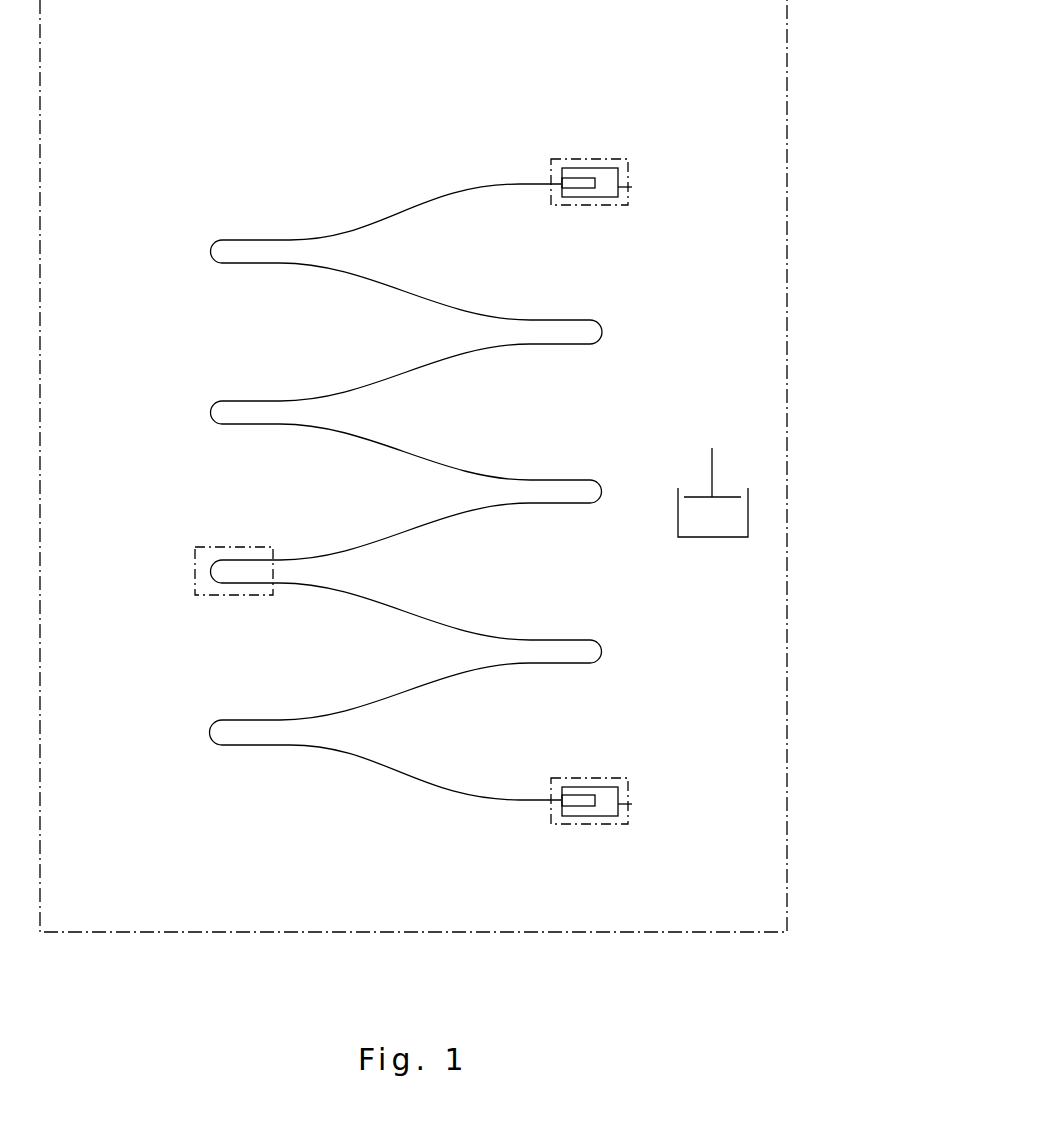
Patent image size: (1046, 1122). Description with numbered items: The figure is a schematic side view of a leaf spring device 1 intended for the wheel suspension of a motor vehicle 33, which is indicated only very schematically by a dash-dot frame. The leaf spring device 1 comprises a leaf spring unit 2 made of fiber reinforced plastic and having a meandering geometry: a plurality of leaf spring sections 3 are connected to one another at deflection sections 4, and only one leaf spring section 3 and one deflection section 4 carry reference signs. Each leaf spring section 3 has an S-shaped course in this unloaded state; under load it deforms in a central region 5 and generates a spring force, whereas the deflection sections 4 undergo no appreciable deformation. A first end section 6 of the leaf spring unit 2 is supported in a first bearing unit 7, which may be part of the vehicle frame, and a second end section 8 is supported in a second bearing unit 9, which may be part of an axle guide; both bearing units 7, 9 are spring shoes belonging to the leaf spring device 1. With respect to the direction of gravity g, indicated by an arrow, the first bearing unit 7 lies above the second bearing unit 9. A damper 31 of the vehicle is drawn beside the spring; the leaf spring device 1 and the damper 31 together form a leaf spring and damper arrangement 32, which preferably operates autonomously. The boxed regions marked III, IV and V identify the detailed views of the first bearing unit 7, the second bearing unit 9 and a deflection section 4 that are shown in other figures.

The leaf spring device 1 is at (349, 82).
The leaf spring unit 2 is at (233, 229).
The leaf spring section 3 is at (487, 183).
The deflection section 4 is at (210, 252).
The central region 5 is at (351, 297).
The first end section 6 is at (582, 197).
The first bearing unit 7 is at (632, 187).
The second end section 8 is at (582, 816).
The second bearing unit 9 is at (632, 804).
The damper 31 is at (712, 537).
The leaf spring and damper arrangement 32 is at (711, 95).
The motor vehicle 33 is at (787, 245).
The detailed view III is at (630, 172).
The detailed view IV is at (630, 790).
The detailed view V is at (195, 573).
The direction of gravity g is at (134, 338).